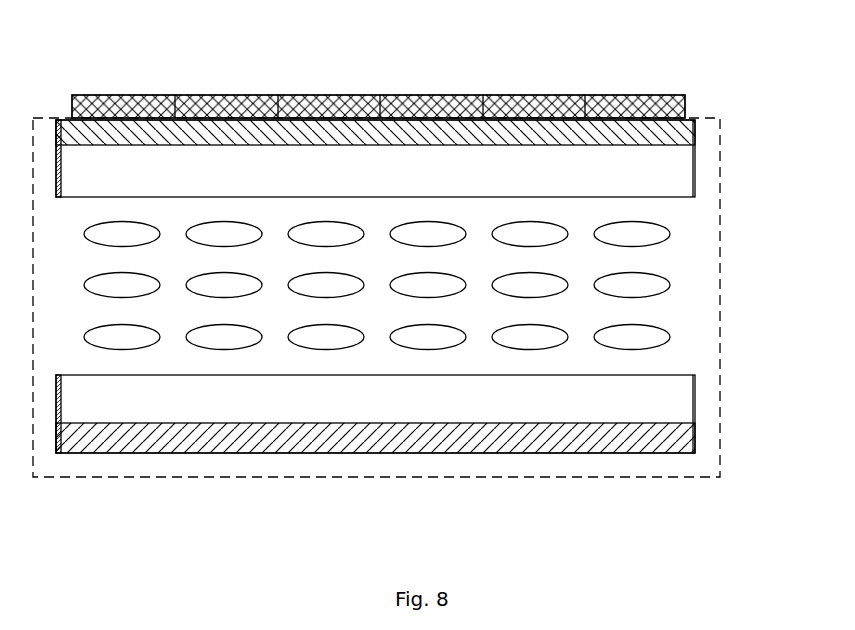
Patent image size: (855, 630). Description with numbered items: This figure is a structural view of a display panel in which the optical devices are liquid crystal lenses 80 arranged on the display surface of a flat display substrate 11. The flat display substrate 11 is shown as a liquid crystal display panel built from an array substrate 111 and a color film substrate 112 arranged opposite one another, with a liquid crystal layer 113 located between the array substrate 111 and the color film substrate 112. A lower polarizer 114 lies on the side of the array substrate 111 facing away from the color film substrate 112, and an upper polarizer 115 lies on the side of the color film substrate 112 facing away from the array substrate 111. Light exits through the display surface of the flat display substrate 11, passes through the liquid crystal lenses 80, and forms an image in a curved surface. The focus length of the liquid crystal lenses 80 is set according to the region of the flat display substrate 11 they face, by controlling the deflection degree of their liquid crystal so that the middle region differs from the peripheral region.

The flat display substrate 11 is at (582, 478).
The array substrate 111 is at (124, 415).
The color film substrate 112 is at (515, 163).
The liquid crystal layer 113 is at (685, 298).
The lower polarizer 114 is at (287, 442).
The upper polarizer 115 is at (213, 127).
The liquid crystal lenses 80 is at (668, 105).